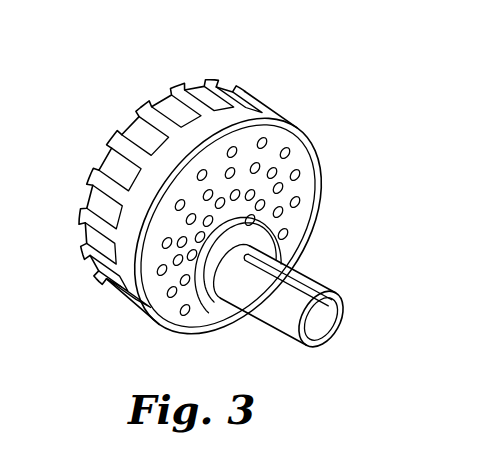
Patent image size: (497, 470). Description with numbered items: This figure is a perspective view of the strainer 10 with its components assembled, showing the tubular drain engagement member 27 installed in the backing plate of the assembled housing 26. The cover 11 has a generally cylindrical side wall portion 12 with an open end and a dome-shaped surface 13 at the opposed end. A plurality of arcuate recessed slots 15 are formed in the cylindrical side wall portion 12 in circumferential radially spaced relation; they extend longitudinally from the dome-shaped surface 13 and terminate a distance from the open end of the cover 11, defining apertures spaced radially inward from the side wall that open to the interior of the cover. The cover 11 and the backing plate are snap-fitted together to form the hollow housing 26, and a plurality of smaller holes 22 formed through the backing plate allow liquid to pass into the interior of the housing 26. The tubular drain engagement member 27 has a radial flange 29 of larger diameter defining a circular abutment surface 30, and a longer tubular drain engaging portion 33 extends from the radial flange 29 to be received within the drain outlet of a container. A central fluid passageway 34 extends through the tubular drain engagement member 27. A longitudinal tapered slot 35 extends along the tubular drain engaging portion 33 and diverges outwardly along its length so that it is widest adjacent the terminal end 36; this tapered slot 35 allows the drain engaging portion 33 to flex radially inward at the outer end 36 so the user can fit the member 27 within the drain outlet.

The strainer 10 is at (270, 46).
The cover 11 is at (263, 104).
The generally cylindrical side wall portion 12 is at (142, 312).
The dome-shaped surface 13 is at (112, 141).
The arcuate recessed slots 15 is at (203, 102).
The smaller holes 22 is at (295, 175).
The housing 26 is at (125, 287).
The tubular drain engagement member 27 is at (267, 323).
The radial flange 29 is at (267, 233).
The circular abutment surface 30 is at (240, 262).
The tubular drain engaging portion 33 is at (288, 337).
The central fluid passageway 34 is at (322, 326).
The longitudinal tapered slot 35 is at (300, 275).
The terminal end 36 is at (340, 310).